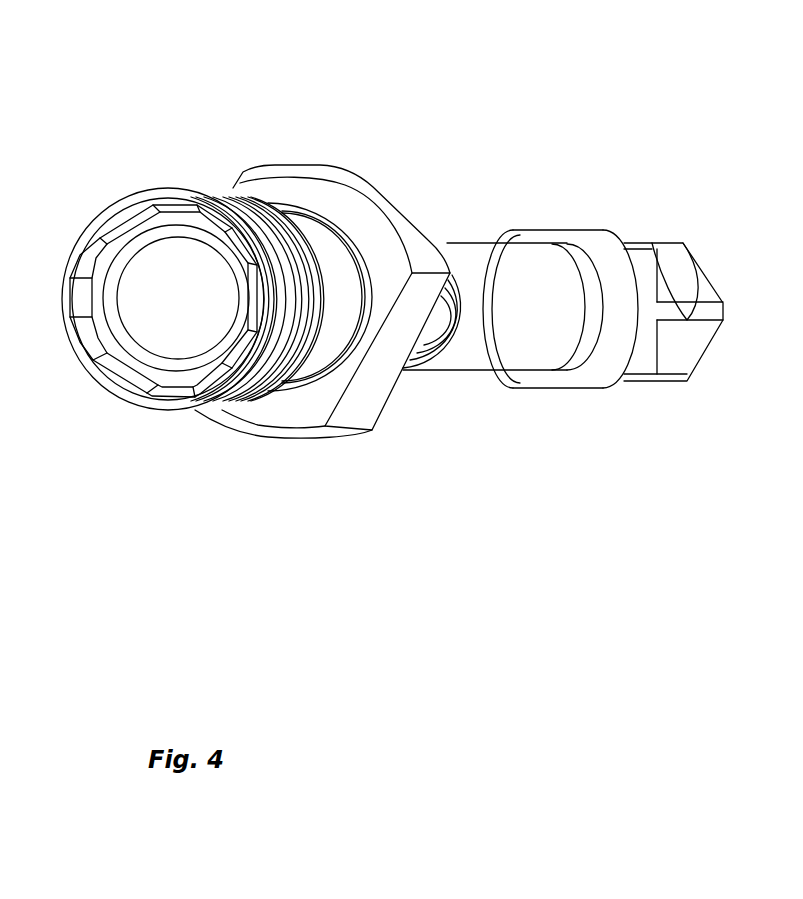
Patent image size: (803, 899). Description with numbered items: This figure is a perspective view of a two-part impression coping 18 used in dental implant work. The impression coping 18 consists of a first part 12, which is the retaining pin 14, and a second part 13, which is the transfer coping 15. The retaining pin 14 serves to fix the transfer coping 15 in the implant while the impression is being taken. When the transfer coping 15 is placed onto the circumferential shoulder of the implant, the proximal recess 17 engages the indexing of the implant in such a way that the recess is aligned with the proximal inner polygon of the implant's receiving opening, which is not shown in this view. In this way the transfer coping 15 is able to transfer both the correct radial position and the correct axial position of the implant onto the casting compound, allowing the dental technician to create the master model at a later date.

The first part 12 is at (563, 365).
The second part 13 is at (256, 329).
The retaining pin 14 is at (590, 378).
The transfer coping 15 is at (183, 393).
The proximal recess 17 is at (137, 225).
The impression coping 18 is at (630, 75).